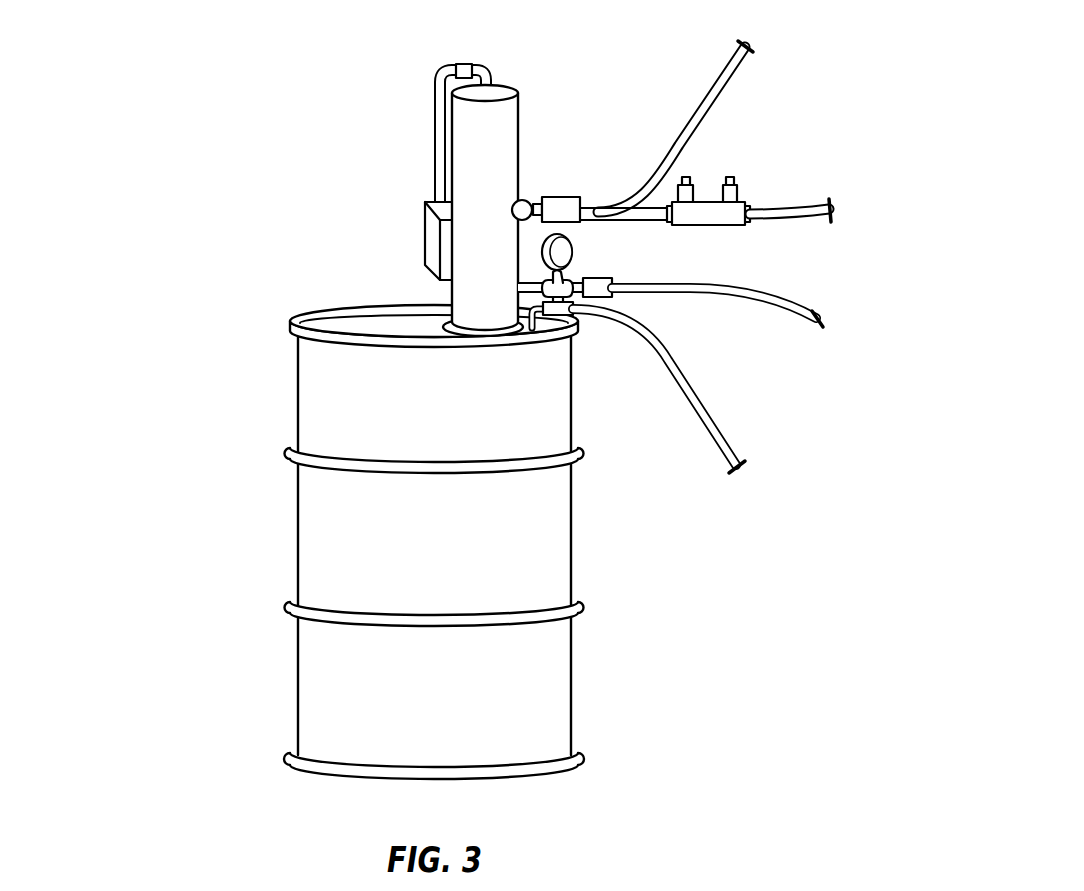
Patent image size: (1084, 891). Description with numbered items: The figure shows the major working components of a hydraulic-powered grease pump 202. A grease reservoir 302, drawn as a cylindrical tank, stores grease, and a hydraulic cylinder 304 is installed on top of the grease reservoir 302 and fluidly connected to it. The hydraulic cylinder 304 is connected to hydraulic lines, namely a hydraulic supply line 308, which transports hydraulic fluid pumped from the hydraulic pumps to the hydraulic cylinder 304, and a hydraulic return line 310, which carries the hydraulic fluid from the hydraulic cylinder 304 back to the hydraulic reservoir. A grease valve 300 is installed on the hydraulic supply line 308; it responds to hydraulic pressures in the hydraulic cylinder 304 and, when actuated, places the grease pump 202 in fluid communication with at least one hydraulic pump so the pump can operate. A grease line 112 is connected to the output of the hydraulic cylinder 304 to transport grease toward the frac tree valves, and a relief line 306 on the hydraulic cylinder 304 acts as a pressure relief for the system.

The grease pump 202 is at (229, 201).
The grease reservoir 302 is at (297, 530).
The hydraulic cylinder 304 is at (432, 148).
The grease valve 300 is at (708, 200).
The hydraulic supply line 308 is at (792, 204).
The hydraulic return line 310 is at (673, 140).
The grease line 112 is at (735, 283).
The relief line 306 is at (693, 391).